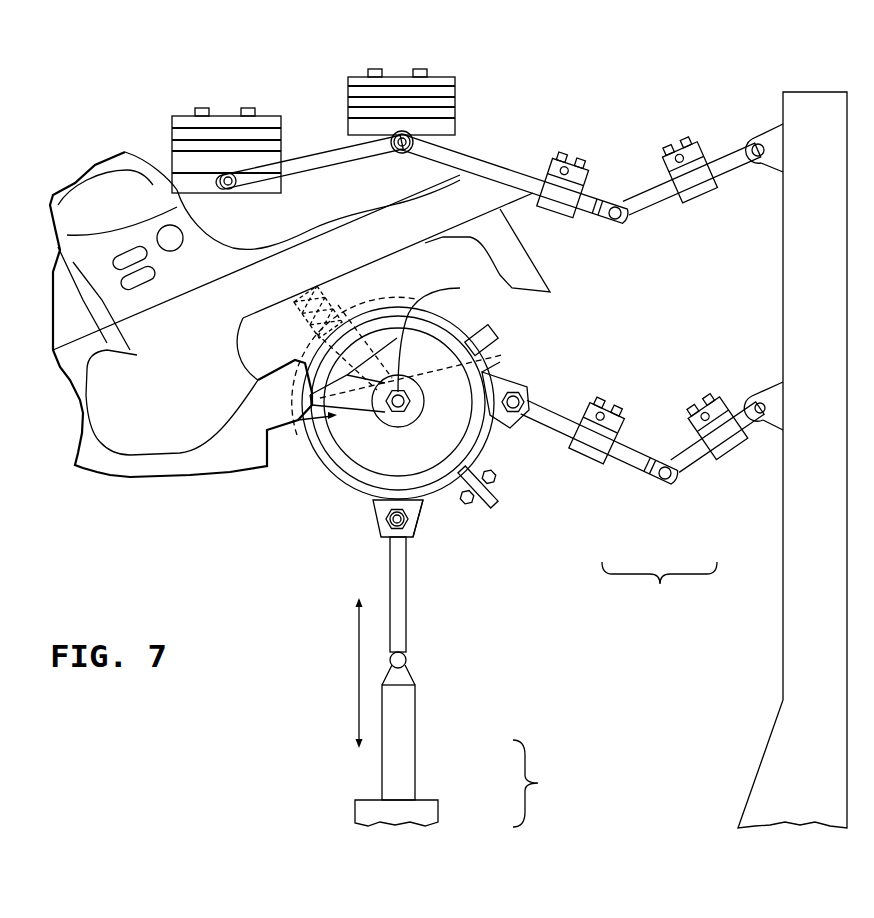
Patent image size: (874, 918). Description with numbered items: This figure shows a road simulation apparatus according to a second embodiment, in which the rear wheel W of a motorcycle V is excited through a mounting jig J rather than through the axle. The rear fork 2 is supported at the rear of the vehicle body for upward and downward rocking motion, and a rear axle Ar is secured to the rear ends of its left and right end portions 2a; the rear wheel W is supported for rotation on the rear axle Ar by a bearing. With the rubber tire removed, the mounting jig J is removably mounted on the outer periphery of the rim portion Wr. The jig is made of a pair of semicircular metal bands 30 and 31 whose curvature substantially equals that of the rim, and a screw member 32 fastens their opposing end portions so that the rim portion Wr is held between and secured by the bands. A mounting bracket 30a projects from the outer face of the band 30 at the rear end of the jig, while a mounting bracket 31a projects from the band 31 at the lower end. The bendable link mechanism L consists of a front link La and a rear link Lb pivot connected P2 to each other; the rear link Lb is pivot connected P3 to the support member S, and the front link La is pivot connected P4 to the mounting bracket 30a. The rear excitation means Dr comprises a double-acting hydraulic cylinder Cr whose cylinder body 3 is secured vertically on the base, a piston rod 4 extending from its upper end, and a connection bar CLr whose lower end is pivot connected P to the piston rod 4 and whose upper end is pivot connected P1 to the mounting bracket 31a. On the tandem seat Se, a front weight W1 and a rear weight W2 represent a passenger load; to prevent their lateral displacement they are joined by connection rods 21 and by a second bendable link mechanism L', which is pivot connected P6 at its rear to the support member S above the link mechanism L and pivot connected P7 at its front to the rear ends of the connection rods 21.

The front weight W1 is at (172, 150).
The connection rod 21 is at (318, 157).
The rear weight W2 is at (455, 122).
The pivot connection P7 is at (400, 153).
The tandem seat Se is at (288, 231).
The second bendable link mechanism L' is at (580, 163).
The pivot connection P6 is at (758, 144).
The screw member 32 is at (326, 300).
The rear axle Ar is at (445, 329).
The rim portion Wr is at (503, 370).
The semicircular band 30 is at (497, 368).
The mounting bracket 30a is at (528, 366).
The pivot connection P3 is at (760, 402).
The pivot connection P2 is at (665, 464).
The rear fork 2 is at (267, 441).
The pivot connection P4 is at (513, 412).
The end portion of rear fork 2a is at (365, 410).
The rear wheel W is at (314, 465).
The mounting jig J is at (505, 492).
The semicircular band 31 is at (358, 505).
The pivot connection P1 is at (390, 523).
The mounting bracket 31a is at (410, 510).
The connection bar CLr is at (403, 600).
The motorcycle V is at (192, 484).
The front link La is at (620, 453).
The rear link Lb is at (697, 447).
The bendable link mechanism L is at (659, 592).
The pivot connection P is at (404, 652).
The rear excitation means Dr is at (420, 728).
The piston rod 4 is at (405, 740).
The cylinder body 3 is at (430, 815).
The hydraulic cylinder Cr is at (546, 783).
The support member S is at (760, 795).